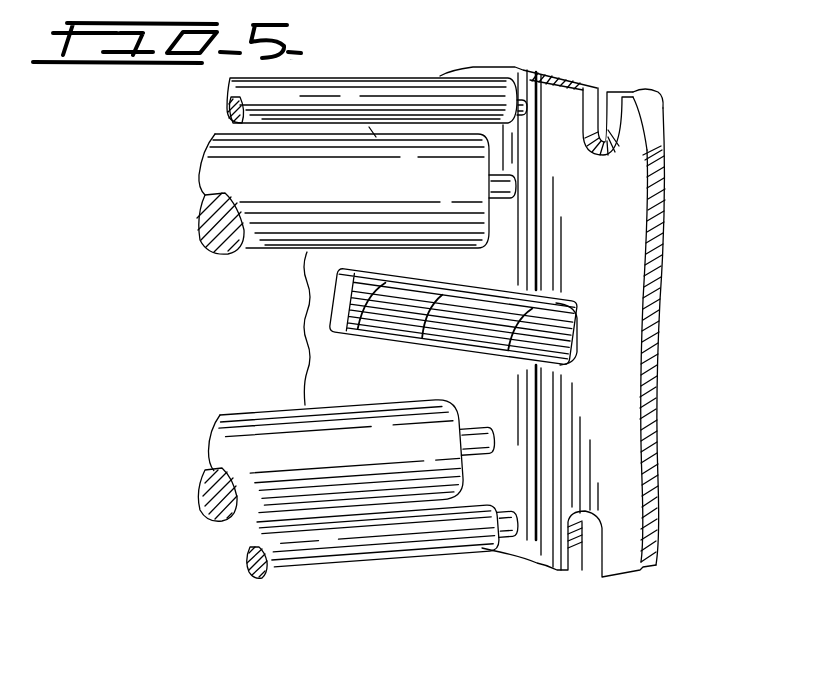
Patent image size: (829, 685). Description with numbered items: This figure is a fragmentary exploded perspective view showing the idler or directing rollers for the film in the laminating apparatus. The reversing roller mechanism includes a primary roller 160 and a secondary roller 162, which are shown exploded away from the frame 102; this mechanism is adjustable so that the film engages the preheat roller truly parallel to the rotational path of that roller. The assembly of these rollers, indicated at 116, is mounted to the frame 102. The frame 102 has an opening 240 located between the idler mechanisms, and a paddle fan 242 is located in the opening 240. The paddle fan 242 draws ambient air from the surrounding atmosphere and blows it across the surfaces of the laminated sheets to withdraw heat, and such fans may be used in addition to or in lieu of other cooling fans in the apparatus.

The frame 102 is at (623, 203).
The connector assembly 116 is at (148, 156).
The primary roller 160 is at (263, 237).
The secondary roller 162 is at (337, 80).
The opening 240 is at (337, 298).
The paddle fan 242 is at (567, 339).